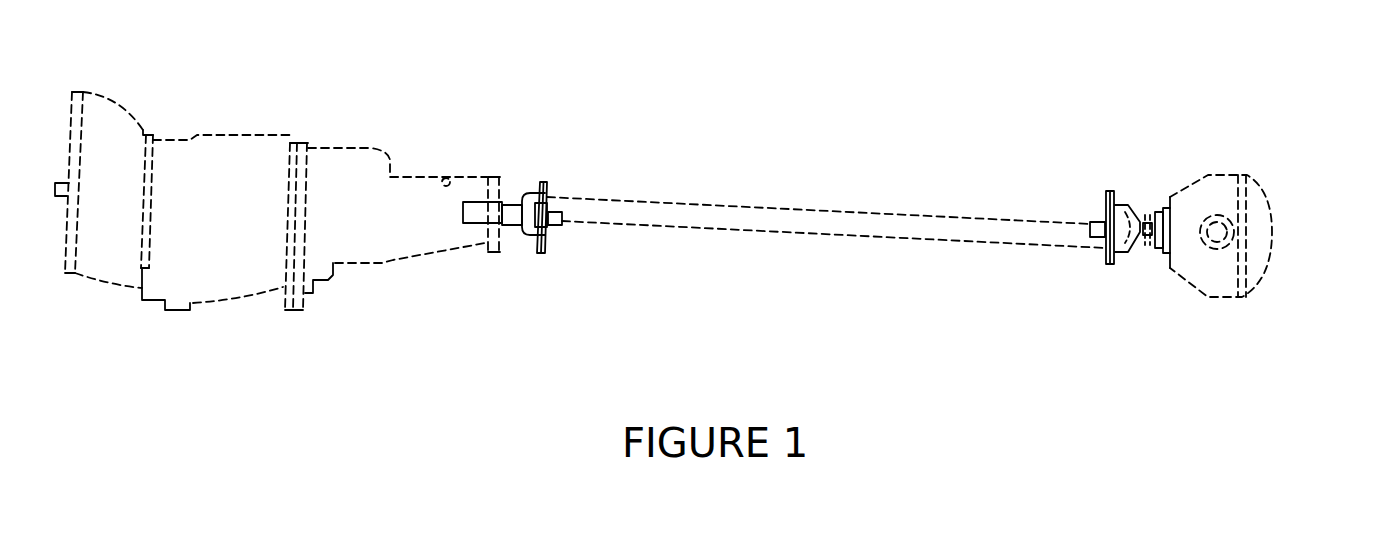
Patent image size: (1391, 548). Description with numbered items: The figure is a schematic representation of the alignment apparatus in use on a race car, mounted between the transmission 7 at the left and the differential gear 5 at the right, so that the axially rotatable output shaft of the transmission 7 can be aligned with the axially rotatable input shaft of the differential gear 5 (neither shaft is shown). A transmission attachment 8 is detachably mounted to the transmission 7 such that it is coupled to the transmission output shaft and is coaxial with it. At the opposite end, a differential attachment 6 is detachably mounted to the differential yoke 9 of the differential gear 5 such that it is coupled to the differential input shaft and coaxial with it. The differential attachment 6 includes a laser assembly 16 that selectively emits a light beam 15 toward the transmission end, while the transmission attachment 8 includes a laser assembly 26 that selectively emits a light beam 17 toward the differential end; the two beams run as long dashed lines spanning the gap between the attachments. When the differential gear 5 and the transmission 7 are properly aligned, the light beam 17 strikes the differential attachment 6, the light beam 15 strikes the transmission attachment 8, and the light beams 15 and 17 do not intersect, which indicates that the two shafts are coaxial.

The differential gear 5 is at (1255, 220).
The differential attachment 6 is at (1113, 193).
The transmission 7 is at (235, 163).
The transmission attachment 8 is at (545, 182).
The differential yoke 9 is at (1132, 212).
The light beam 15 is at (805, 209).
The laser assembly 16 is at (1093, 223).
The light beam 17 is at (843, 235).
The laser assembly 26 is at (562, 222).